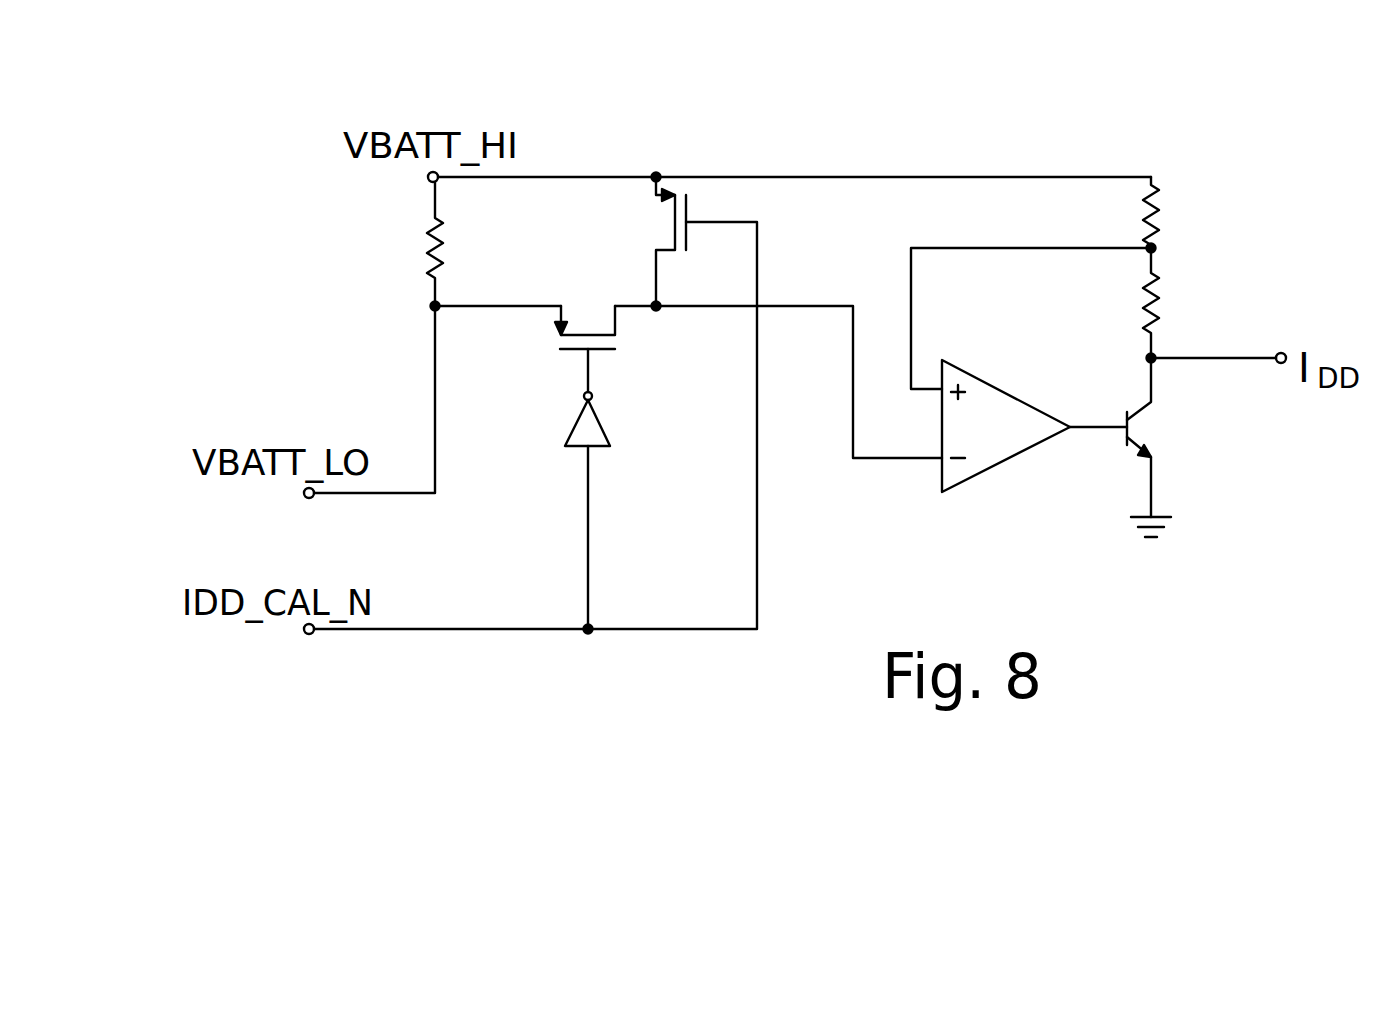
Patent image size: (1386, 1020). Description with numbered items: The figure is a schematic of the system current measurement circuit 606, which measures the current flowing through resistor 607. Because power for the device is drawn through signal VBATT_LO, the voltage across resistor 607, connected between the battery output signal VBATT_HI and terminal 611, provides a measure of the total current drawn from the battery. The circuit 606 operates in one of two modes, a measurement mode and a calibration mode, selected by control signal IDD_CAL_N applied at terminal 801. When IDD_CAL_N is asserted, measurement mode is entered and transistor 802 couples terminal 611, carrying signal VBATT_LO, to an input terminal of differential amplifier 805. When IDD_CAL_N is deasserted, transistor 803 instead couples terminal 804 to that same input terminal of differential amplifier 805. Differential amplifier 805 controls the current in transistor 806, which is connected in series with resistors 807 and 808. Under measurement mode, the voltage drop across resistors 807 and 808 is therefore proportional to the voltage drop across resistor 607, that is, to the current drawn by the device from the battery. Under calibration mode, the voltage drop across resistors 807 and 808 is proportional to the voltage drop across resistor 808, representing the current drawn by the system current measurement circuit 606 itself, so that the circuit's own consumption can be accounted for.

The system current measurement circuit 606 is at (922, 153).
The resistor 607 is at (425, 238).
The terminal 611 is at (436, 445).
The terminal 801 is at (470, 630).
The transistor 802 is at (615, 332).
The transistor 803 is at (687, 232).
The terminal 804 is at (738, 178).
The differential amplifier 805 is at (1000, 463).
The transistor 806 is at (1140, 442).
The resistor 807 is at (1140, 305).
The resistor 808 is at (1140, 198).